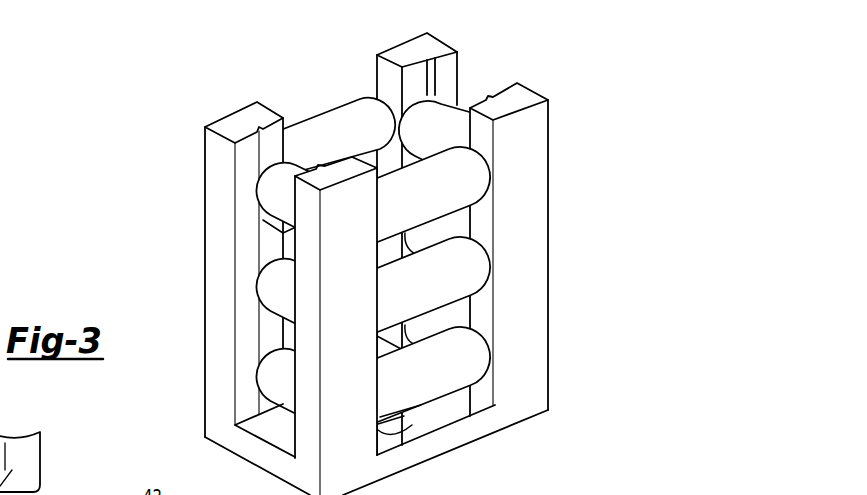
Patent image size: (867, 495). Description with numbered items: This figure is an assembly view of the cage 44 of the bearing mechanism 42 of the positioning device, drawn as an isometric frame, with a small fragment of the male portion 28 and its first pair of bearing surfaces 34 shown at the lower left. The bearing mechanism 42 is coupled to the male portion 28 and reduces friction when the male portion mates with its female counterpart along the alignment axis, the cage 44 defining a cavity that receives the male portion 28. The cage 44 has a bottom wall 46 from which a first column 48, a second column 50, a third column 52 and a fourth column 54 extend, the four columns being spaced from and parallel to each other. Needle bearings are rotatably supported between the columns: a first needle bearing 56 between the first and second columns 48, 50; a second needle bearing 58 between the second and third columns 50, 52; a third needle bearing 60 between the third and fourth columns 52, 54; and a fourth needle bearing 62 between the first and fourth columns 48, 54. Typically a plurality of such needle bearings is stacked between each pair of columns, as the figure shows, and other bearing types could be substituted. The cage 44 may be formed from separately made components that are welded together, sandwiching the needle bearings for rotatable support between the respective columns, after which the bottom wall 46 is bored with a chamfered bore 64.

The male portion 28 is at (40, 452).
The first pair of bearing surfaces 34 is at (40, 476).
The bearing mechanism 42 is at (513, 50).
The cage 44 is at (383, 247).
The bottom wall 46 is at (437, 462).
The first column 48 is at (232, 125).
The second column 50 is at (437, 50).
The third column 52 is at (527, 100).
The fourth column 54 is at (333, 182).
The first needle bearing 56 is at (302, 133).
The second needle bearing 58 is at (457, 118).
The third needle bearing 60 is at (465, 178).
The fourth needle bearing 62 is at (267, 192).
The chamfered bore 64 is at (423, 414).